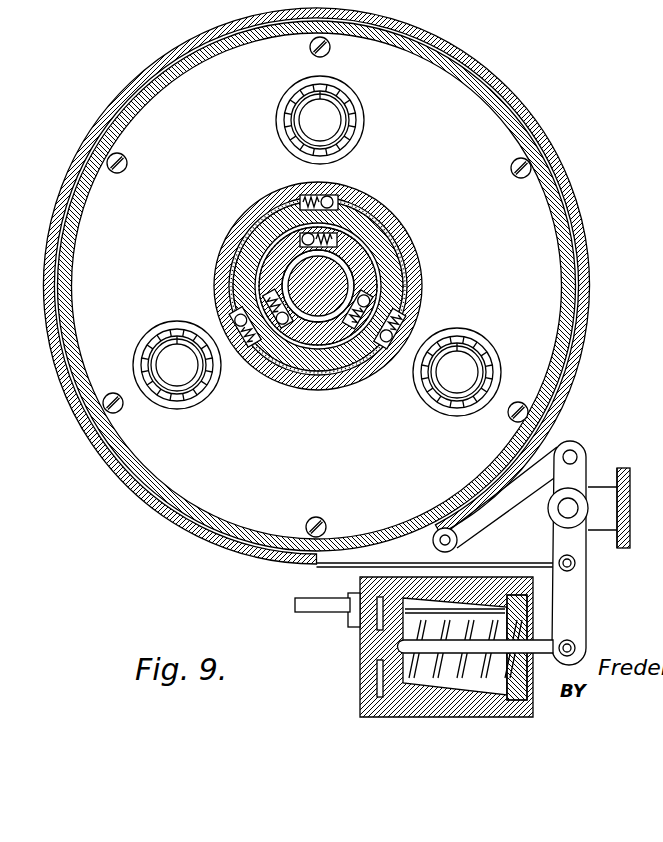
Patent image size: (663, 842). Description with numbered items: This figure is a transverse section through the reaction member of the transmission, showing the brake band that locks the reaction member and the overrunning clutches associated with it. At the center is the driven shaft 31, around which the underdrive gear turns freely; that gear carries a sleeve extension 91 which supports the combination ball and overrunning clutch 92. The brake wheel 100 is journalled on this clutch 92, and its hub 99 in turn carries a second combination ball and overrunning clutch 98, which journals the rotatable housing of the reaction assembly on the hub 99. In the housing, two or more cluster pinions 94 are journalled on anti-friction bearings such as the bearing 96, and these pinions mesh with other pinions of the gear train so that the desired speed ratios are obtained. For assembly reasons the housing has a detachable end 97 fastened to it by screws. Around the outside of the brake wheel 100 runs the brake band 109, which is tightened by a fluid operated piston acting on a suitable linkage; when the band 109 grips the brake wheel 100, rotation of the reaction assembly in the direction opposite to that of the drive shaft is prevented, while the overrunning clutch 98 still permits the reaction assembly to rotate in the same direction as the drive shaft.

The driven shaft 31 is at (300, 280).
The sleeve extension 91 is at (300, 360).
The combination ball and overrunning clutch 92 is at (290, 195).
The cluster pinions 94 is at (300, 115).
The anti-friction bearing 96 is at (352, 106).
The detachable end 97 is at (436, 162).
The combination ball and overrunning clutch 98 is at (331, 48).
The hub 99 is at (330, 385).
The brake wheel 100 is at (562, 231).
The brake band 109 is at (530, 103).